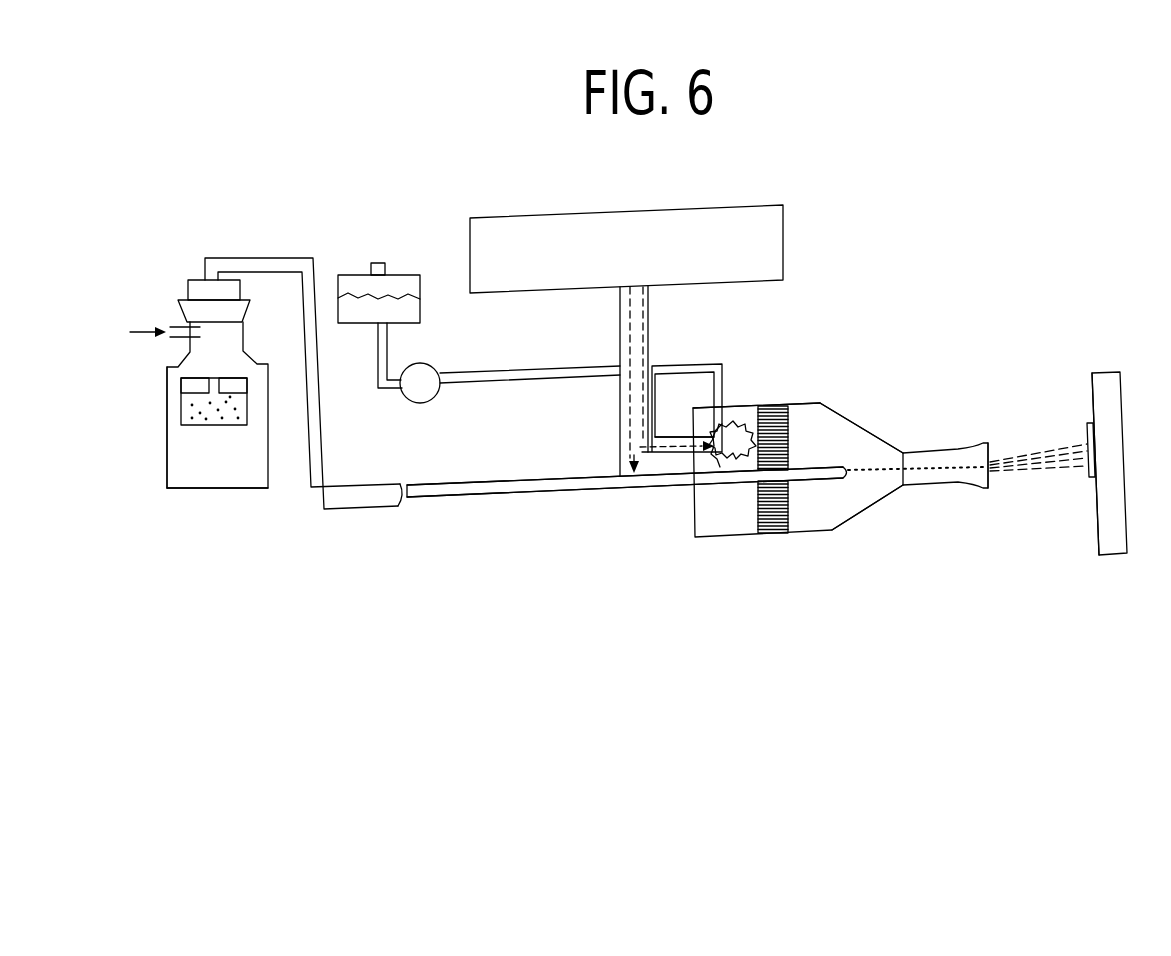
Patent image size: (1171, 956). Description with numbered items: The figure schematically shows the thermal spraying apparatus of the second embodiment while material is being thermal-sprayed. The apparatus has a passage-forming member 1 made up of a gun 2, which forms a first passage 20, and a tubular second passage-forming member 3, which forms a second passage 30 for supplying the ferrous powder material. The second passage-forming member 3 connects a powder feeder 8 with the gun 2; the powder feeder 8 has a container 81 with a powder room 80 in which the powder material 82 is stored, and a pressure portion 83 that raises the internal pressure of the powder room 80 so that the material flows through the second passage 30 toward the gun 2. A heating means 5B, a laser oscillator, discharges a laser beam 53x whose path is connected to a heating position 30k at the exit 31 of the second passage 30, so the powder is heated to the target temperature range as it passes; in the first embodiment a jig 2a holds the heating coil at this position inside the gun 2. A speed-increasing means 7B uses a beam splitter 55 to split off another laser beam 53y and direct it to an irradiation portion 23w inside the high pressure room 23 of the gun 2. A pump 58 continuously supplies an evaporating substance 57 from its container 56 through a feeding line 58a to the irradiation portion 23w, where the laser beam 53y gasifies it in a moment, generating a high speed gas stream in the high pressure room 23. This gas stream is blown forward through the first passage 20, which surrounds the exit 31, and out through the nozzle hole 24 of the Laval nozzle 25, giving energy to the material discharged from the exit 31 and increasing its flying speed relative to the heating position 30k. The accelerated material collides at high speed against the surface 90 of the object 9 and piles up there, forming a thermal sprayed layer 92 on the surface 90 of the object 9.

The passage-forming member 1 is at (584, 500).
The gun 2 is at (842, 525).
The jig 2a is at (786, 408).
The second passage-forming member 3 is at (438, 498).
The heating means 5B is at (786, 262).
The speed-increasing means 7B is at (676, 424).
The powder feeder 8 is at (167, 437).
The powder room 80 is at (184, 465).
The container 81 is at (167, 399).
The material 82 is at (218, 419).
The pressure portion 83 is at (172, 326).
The object 9 is at (1121, 527).
The surface 90 is at (1098, 540).
The thermal sprayed layer 92 is at (1087, 432).
The first passage 20 is at (853, 500).
The high pressure room 23 is at (747, 413).
The irradiation portion 23w is at (723, 472).
The nozzle hole 24 is at (977, 488).
The nozzle 25 is at (980, 443).
The second passage 30 is at (603, 481).
The heating position 30k is at (622, 472).
The exit 31 is at (852, 470).
The laser beam 53x is at (618, 318).
The laser beam 53y is at (674, 453).
The beam splitter 55 is at (655, 453).
The container 56 is at (421, 305).
The evaporating substance 57 is at (398, 305).
The pump 58 is at (419, 404).
The feeding line 58a is at (467, 383).